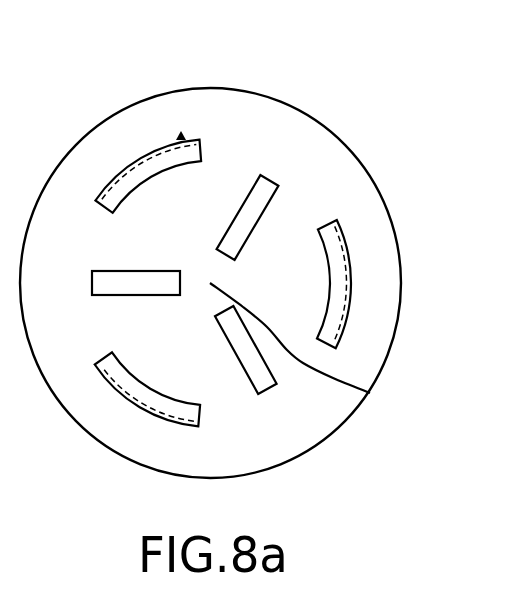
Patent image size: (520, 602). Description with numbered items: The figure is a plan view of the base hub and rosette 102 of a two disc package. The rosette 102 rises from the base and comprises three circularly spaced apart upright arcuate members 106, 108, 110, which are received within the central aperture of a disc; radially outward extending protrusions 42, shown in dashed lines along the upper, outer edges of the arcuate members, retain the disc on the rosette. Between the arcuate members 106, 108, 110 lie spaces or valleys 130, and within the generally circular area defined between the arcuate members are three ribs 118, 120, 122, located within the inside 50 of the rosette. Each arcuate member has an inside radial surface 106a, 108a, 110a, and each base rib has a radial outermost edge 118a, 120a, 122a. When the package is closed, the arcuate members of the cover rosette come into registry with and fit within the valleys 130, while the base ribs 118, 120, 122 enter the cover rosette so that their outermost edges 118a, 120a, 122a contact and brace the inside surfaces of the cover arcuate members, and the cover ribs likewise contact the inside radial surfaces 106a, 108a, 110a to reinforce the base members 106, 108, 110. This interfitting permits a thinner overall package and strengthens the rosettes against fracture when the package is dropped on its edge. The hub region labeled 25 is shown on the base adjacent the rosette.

The cap body 25 is at (355, 193).
The radially outward extending protrusions 42 is at (155, 145).
The inside of the rosette 50 is at (370, 393).
The rosette 102 is at (181, 139).
The upright arcuate member 106 is at (145, 163).
The inside radial surface 106a is at (145, 181).
The upright arcuate member 108 is at (349, 267).
The inside radial surface 108a is at (328, 278).
The upright arcuate member 110 is at (133, 407).
The inside radial surface 110a is at (122, 367).
The base rib 118 is at (123, 279).
The radial outermost edge 118a is at (92, 279).
The base rib 120 is at (252, 210).
The radial outermost edge 120a is at (277, 173).
The base rib 122 is at (247, 347).
The radial outermost edge 122a is at (268, 390).
The spaces (valleys) 130 is at (255, 160).